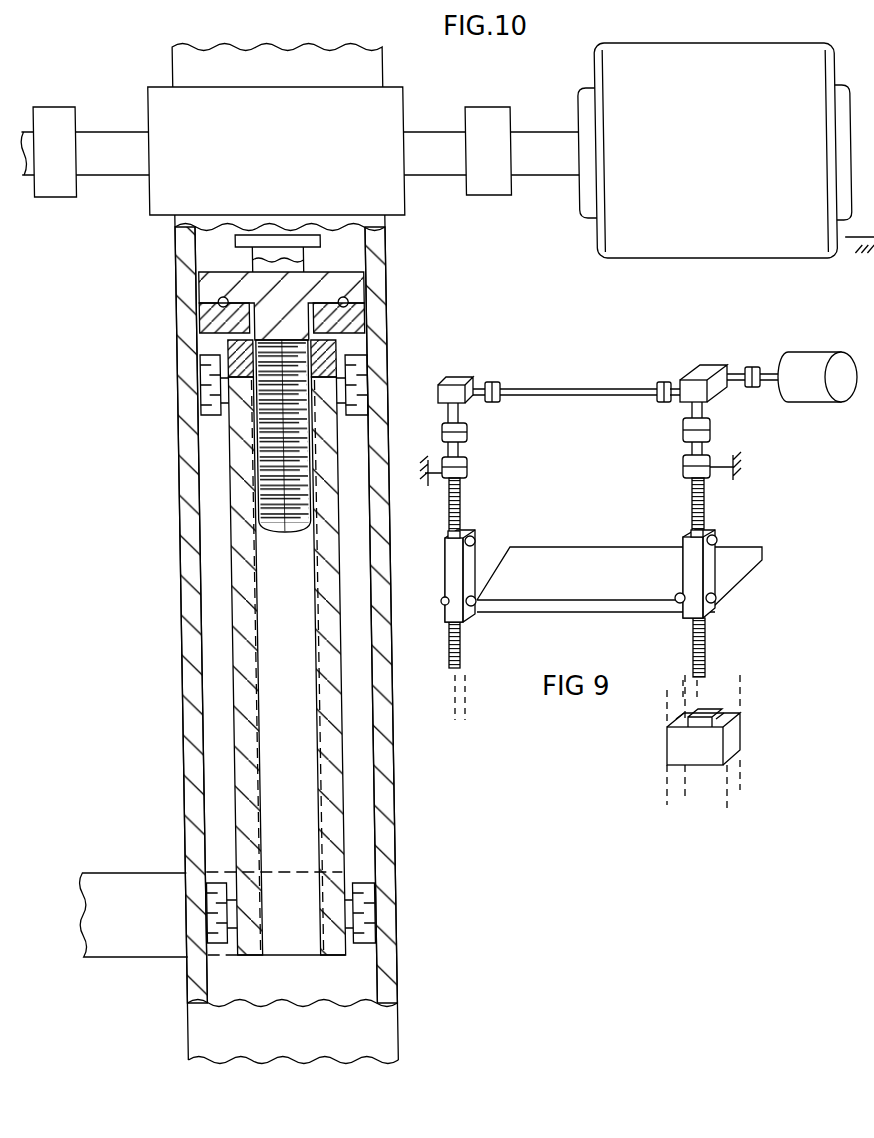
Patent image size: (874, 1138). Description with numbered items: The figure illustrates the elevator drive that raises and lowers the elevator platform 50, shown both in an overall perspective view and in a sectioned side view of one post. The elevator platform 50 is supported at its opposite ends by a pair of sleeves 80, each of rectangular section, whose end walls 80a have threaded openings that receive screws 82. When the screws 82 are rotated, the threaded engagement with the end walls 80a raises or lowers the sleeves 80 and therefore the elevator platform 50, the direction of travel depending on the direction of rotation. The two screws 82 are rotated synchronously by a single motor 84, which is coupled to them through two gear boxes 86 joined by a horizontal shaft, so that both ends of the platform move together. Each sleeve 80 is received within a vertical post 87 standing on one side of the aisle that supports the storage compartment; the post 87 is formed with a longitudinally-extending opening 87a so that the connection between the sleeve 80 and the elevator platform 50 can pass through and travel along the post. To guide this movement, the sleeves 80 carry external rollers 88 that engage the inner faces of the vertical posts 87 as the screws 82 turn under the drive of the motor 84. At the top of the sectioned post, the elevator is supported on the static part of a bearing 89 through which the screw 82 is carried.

In FIG. 10, the elevator platform 50 is at (122, 905).
In FIG. 9, the elevator platform 50 is at (589, 566).
In FIG. 10, the sleeve 80 is at (325, 708).
In FIG. 9, the sleeve 80 is at (457, 590).
In FIG. 10, the end wall 80a is at (364, 322).
In FIG. 9, the end wall 80a is at (463, 535).
In FIG. 10, the screw 82 is at (252, 465).
In FIG. 9, the screw 82 is at (462, 507).
In FIG. 10, the motor 84 is at (722, 62).
In FIG. 9, the motor 84 is at (800, 368).
In FIG. 10, the gear box 86 is at (303, 105).
In FIG. 9, the gear box 86 is at (451, 385).
In FIG. 10, the vertical post 87 is at (185, 572).
In FIG. 9, the vertical post 87 is at (728, 742).
In FIG. 9, the longitudinally-extending opening 87a is at (726, 718).
In FIG. 10, the external roller 88 is at (210, 392).
In FIG. 9, the external roller 88 is at (476, 542).
In FIG. 10, the bearing 89 is at (195, 312).